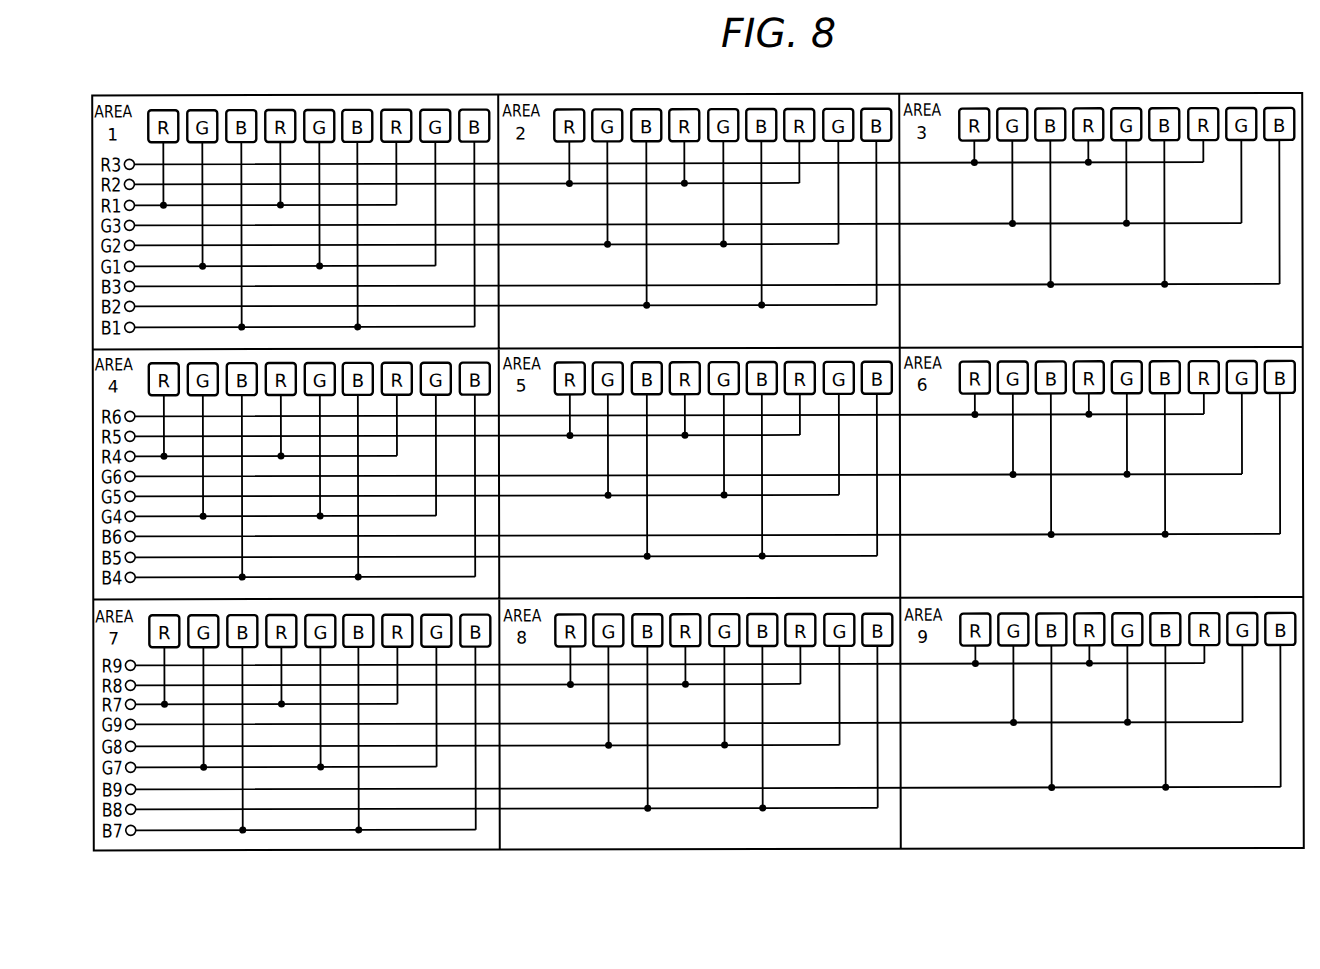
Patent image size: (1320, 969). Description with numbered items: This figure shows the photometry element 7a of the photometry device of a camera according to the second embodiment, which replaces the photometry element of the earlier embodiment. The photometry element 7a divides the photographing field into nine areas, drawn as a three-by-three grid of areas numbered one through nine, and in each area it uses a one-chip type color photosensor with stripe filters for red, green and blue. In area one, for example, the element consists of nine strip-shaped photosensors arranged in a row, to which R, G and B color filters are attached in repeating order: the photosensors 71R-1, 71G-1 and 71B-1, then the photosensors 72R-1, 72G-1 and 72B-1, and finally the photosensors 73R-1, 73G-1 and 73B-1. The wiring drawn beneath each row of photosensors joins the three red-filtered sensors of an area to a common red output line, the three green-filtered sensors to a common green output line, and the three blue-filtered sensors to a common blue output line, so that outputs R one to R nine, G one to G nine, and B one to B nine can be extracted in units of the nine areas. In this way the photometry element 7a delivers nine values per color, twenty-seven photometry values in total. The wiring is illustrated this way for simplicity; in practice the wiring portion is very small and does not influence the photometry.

The photometry element 7a is at (1257, 100).
The strip-shaped photosensor with R color filter 71R-1 is at (165, 110).
The strip-shaped photosensor with G color filter 71G-1 is at (203, 110).
The strip-shaped photosensor with B color filter 71B-1 is at (242, 110).
The strip-shaped photosensor with R color filter 72R-1 is at (281, 110).
The strip-shaped photosensor with G color filter 72G-1 is at (320, 110).
The strip-shaped photosensor with B color filter 72B-1 is at (358, 110).
The strip-shaped photosensor with R color filter 73R-1 is at (397, 110).
The strip-shaped photosensor with G color filter 73G-1 is at (436, 110).
The strip-shaped photosensor with B color filter 73B-1 is at (475, 110).